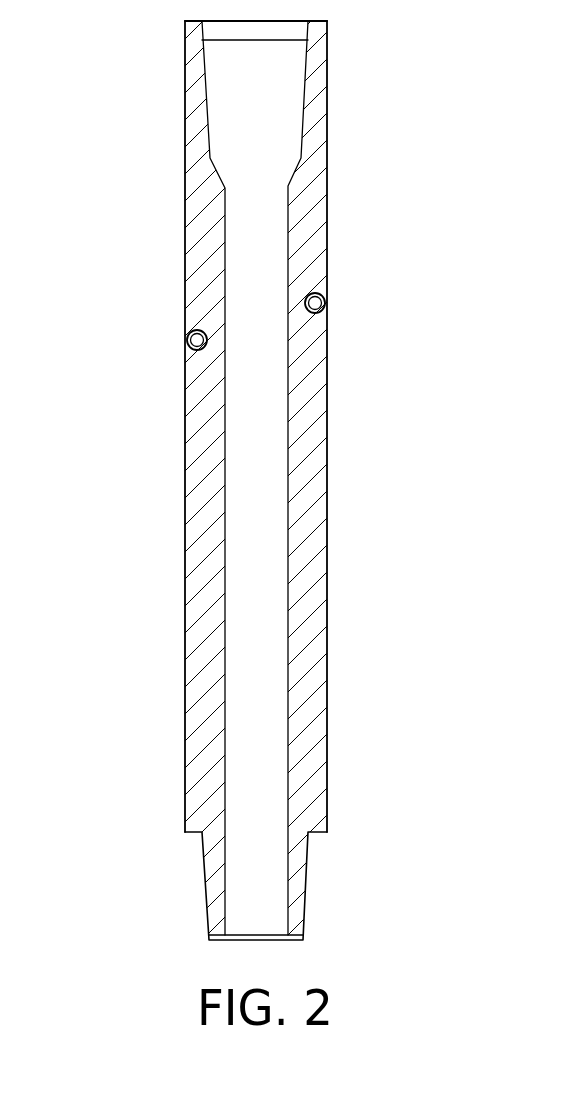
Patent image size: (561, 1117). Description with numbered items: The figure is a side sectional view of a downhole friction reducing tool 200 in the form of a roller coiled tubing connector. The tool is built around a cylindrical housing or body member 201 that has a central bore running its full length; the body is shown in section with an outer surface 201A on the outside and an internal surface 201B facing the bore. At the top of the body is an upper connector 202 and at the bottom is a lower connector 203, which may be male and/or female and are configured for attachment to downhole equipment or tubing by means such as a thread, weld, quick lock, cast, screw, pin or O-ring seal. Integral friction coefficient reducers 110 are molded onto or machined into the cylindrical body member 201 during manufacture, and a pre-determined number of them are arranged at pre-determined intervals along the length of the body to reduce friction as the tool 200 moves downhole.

The friction reducing tool 200 is at (255, 480).
The cylindrical body member 201 is at (324, 480).
The outer surface 201A is at (326, 426).
The internal surface 201B is at (332, 478).
The upper connector 202 is at (321, 102).
The friction coefficient reducer 110 is at (321, 328).
The lower connector 203 is at (306, 886).